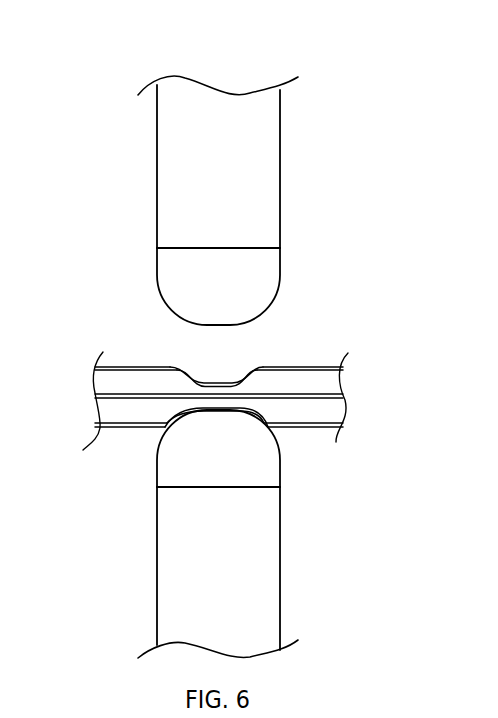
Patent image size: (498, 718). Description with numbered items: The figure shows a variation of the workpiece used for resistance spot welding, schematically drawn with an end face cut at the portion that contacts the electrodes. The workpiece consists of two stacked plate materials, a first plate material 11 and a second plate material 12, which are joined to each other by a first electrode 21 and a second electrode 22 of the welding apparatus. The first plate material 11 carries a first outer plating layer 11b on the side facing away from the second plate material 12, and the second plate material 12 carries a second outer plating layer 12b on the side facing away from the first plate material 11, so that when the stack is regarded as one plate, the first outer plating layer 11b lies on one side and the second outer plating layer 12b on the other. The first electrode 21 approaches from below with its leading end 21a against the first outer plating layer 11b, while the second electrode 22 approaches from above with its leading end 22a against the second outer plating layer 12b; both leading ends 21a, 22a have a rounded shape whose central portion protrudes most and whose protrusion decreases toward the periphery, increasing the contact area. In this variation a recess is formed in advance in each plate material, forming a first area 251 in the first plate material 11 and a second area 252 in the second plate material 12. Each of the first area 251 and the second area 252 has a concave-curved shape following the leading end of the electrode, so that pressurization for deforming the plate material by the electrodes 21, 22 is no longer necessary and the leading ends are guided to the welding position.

The first plate material 11 is at (115, 413).
The first outer plating layer 11b is at (137, 425).
The second plate material 12 is at (122, 378).
The second outer plating layer 12b is at (138, 362).
The first electrode 21 is at (193, 623).
The leading end of the first electrode 21a is at (234, 407).
The second electrode 22 is at (190, 120).
The leading end of the second electrode 22a is at (220, 325).
The first area 251 is at (207, 410).
The second area 252 is at (227, 378).